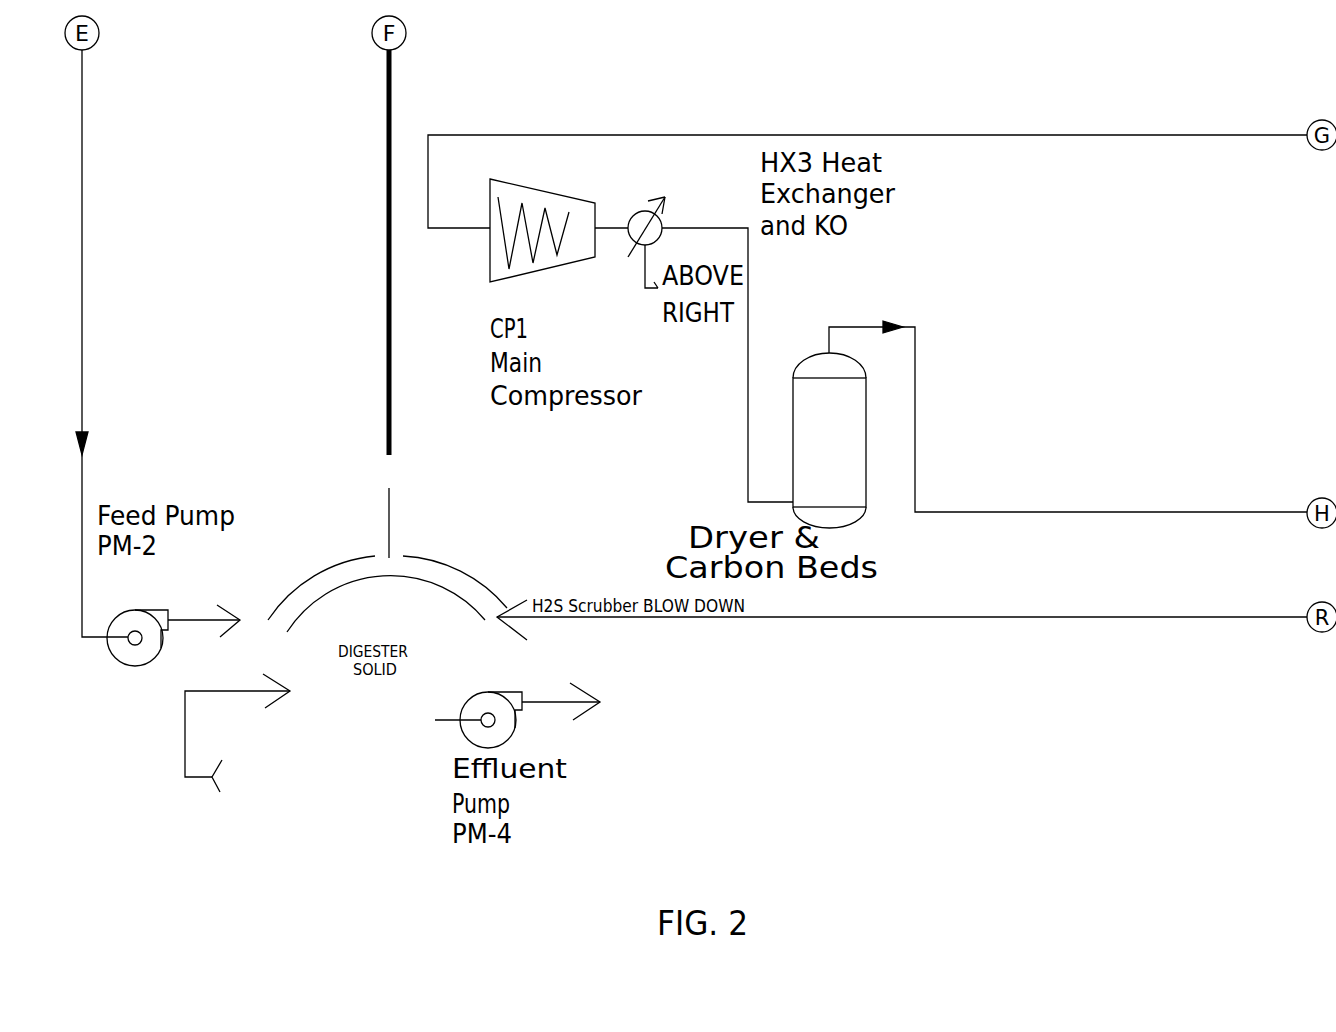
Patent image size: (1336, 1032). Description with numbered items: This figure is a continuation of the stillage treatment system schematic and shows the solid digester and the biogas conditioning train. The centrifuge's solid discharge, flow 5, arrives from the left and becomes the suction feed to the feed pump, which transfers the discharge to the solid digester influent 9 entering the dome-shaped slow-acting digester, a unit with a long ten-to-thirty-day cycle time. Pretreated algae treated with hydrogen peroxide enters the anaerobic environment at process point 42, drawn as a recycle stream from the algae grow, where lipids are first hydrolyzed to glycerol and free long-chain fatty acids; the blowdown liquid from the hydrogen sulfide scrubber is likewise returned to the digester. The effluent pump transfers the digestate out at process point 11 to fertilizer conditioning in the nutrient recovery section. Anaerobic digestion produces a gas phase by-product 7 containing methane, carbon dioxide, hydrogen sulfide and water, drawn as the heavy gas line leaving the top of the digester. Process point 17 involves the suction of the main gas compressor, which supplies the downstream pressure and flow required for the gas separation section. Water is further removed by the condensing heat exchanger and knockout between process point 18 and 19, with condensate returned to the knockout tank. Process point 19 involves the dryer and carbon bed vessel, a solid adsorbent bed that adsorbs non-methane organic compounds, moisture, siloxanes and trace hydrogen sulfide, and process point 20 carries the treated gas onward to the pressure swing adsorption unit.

The centrifuge solid discharge flow 5 is at (112, 412).
The gas phase by-product 7 is at (355, 370).
The solid digester influent 9 is at (188, 575).
The digestate transfer to nutrient recovery 11 is at (545, 659).
The gas compressor suction 17 is at (467, 180).
The compressor discharge to condensing heat exchanger 18 is at (615, 175).
The dryer and carbon bed inlet 19 is at (695, 177).
The gas stream to pressure swing adsorption unit 20 is at (867, 276).
The pretreated algae entry point 42 is at (158, 730).